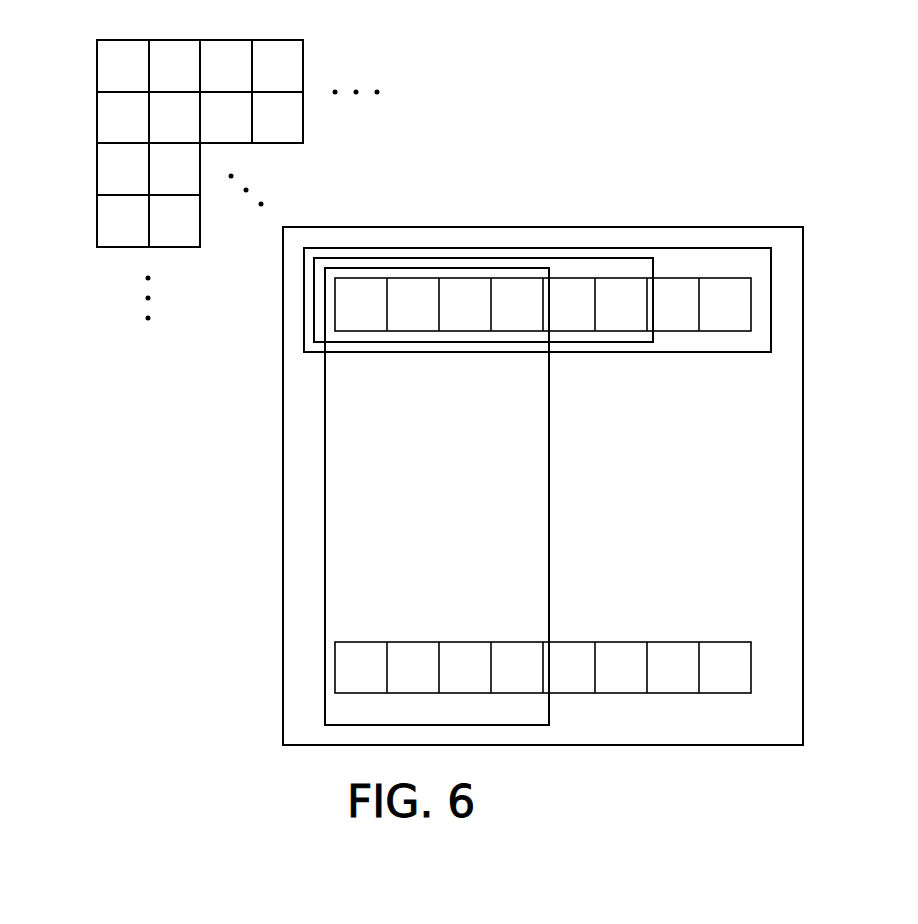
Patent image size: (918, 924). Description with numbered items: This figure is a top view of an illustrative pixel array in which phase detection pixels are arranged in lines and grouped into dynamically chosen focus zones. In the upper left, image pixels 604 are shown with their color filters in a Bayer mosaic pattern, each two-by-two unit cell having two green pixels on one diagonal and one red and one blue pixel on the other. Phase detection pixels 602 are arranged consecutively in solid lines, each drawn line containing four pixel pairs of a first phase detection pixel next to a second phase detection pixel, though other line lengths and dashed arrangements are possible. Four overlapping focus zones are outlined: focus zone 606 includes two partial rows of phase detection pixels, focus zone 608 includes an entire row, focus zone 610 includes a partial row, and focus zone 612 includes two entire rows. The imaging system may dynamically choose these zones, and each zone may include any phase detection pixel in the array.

The phase detection pixels 602 is at (672, 327).
The image pixels 604 is at (123, 46).
The focus zone 606 is at (549, 438).
The focus zone 608 is at (640, 345).
The focus zone 610 is at (426, 258).
The focus zone 612 is at (640, 227).